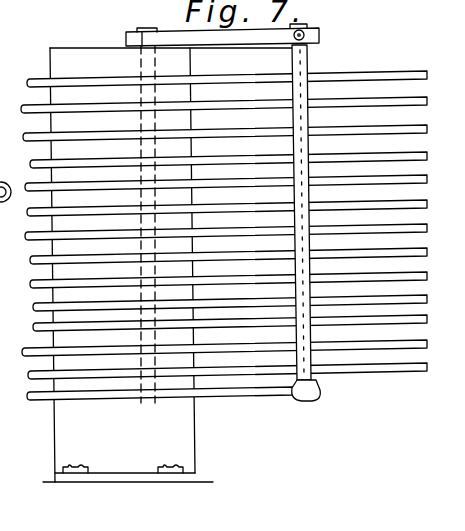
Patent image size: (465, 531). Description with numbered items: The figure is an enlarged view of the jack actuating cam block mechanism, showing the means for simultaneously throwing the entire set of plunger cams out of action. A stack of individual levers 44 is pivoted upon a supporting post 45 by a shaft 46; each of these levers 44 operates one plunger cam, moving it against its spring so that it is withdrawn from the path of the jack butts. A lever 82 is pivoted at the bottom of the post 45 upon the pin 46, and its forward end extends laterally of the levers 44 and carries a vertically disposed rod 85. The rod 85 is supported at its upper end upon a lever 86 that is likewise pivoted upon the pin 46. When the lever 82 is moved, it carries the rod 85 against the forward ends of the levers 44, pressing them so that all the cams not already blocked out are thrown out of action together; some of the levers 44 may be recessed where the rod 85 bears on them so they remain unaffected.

The levers 44 is at (400, 75).
The supporting post 45 is at (68, 440).
The shaft 46 is at (148, 405).
The lever 82 is at (272, 394).
The rod 85 is at (308, 358).
The lever 86 is at (253, 48).